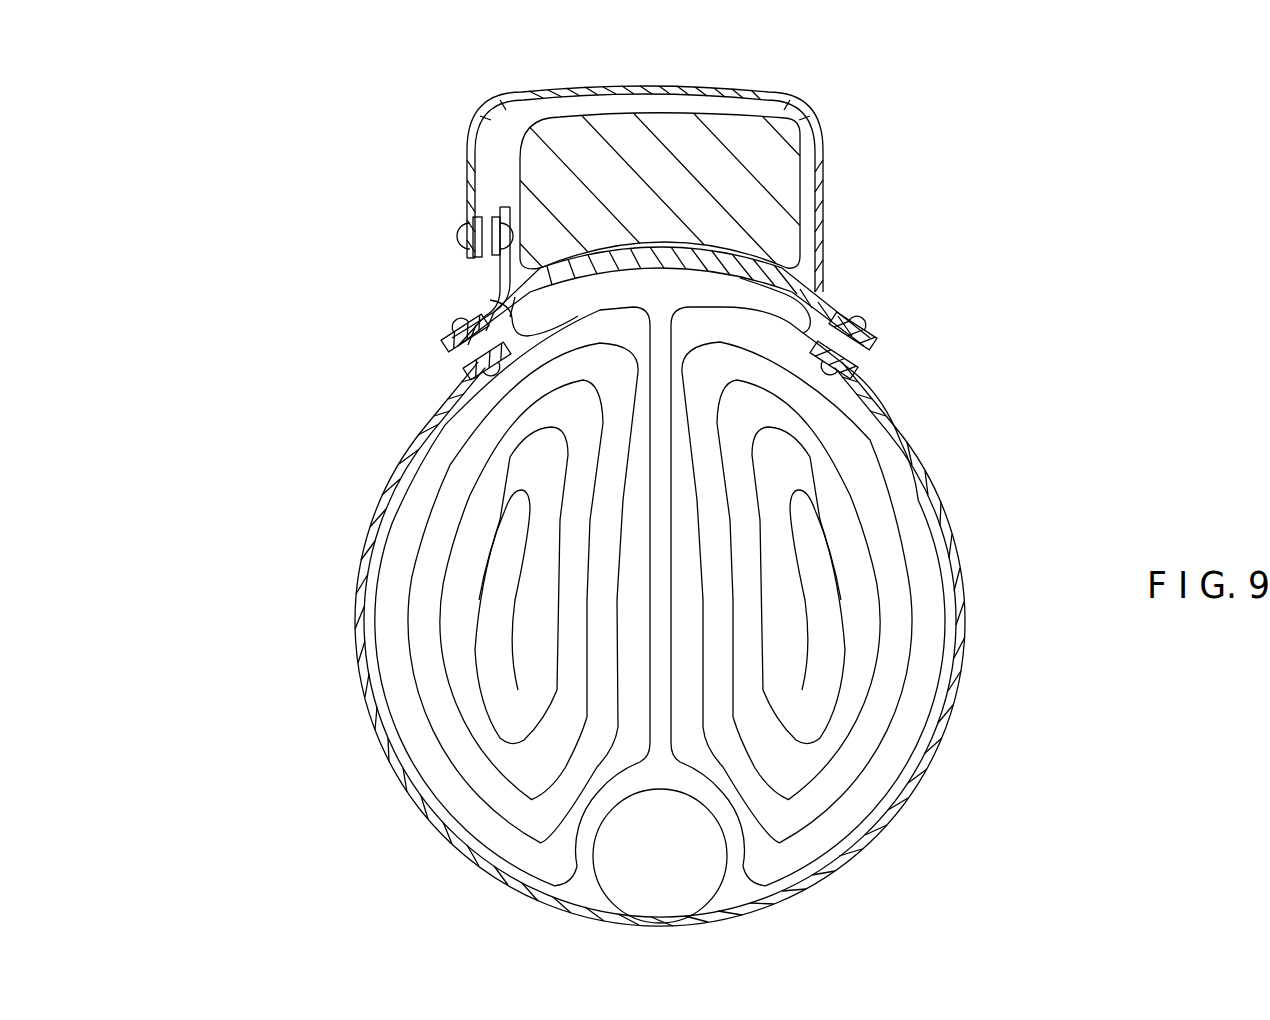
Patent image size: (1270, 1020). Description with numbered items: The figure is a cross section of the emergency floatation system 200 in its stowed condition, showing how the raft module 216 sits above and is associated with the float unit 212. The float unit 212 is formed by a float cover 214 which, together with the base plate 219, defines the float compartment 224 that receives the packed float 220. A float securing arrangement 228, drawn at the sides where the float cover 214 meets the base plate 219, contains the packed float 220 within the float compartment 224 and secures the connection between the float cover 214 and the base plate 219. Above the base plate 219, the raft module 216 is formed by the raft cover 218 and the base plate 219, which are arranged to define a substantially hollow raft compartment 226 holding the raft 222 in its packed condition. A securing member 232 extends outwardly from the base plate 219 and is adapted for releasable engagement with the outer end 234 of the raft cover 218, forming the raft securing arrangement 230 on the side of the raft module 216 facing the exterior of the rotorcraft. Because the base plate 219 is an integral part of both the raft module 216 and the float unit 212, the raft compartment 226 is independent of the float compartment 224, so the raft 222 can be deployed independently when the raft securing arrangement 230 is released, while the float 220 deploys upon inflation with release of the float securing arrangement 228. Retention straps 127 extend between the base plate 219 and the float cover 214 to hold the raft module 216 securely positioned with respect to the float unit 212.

The retention straps 127 is at (333, 473).
The emergency floatation system 200 is at (878, 173).
The float unit 212 is at (987, 580).
The float cover 214 is at (873, 823).
The raft module 216 is at (600, 62).
The raft cover 218 is at (822, 137).
The base plate 219 is at (810, 295).
The float 220 is at (810, 680).
The raft 222 is at (773, 213).
The float compartment 224 is at (910, 483).
The raft compartment 226 is at (488, 143).
The float securing arrangement 228 is at (435, 332).
The raft securing arrangement 230 is at (490, 208).
The securing member 232 is at (497, 270).
The outer end 234 is at (468, 218).